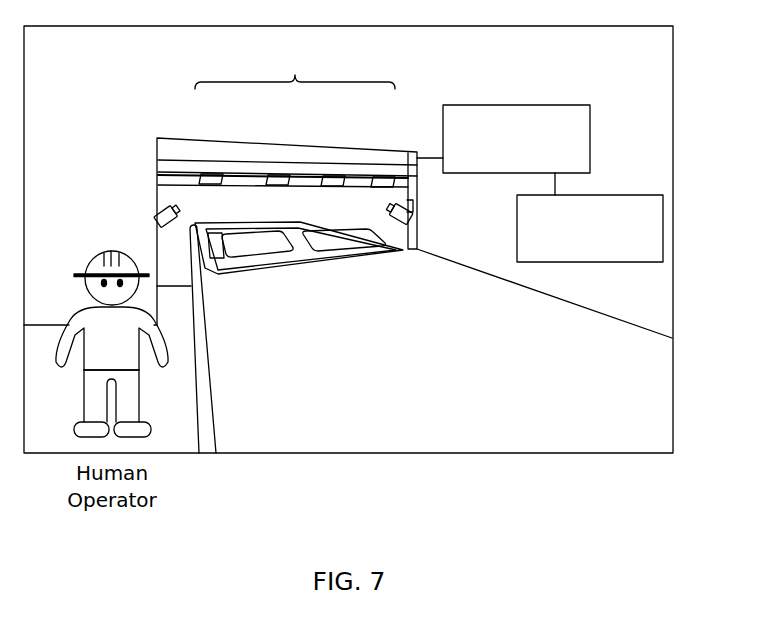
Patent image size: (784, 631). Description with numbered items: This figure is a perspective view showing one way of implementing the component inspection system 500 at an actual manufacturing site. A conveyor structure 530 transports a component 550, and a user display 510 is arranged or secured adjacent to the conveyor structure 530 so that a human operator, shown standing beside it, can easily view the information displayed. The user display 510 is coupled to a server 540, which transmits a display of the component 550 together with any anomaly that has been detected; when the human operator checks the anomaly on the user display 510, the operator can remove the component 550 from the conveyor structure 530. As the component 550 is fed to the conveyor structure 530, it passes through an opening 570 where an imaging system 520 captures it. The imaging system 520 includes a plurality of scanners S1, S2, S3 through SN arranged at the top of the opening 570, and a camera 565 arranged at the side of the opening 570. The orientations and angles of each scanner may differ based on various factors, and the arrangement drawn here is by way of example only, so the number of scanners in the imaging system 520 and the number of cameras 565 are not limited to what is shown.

The sortation system 500 is at (481, 240).
The user display 510 is at (503, 139).
The imaging system 520 is at (286, 118).
The conveyor structure 530 is at (655, 368).
The server 540 is at (590, 217).
The component 550 is at (210, 240).
The camera 565 is at (157, 226).
The opening 570 is at (367, 212).
The scanner S1 is at (212, 177).
The scanner S2 is at (280, 178).
The scanner S3 is at (333, 179).
The scanner SN is at (383, 180).